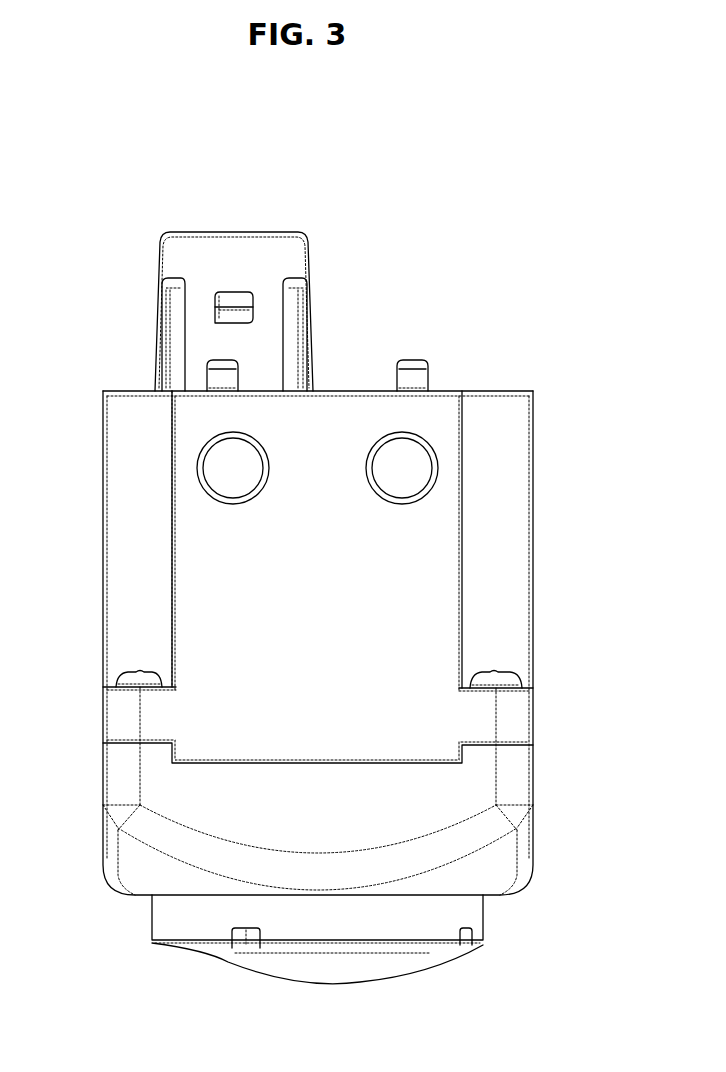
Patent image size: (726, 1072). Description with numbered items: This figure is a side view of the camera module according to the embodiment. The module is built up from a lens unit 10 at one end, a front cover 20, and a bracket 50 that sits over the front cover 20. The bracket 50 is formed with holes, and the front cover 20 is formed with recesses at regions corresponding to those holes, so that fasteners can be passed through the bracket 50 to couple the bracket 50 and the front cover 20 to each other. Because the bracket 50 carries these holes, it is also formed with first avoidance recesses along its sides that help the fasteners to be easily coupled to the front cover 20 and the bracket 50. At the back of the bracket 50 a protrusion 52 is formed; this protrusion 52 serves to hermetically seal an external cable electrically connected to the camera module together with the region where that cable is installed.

The lens unit 10 is at (468, 917).
The front cover 20 is at (513, 782).
The bracket 50 is at (354, 418).
The protrusion 52 is at (233, 262).